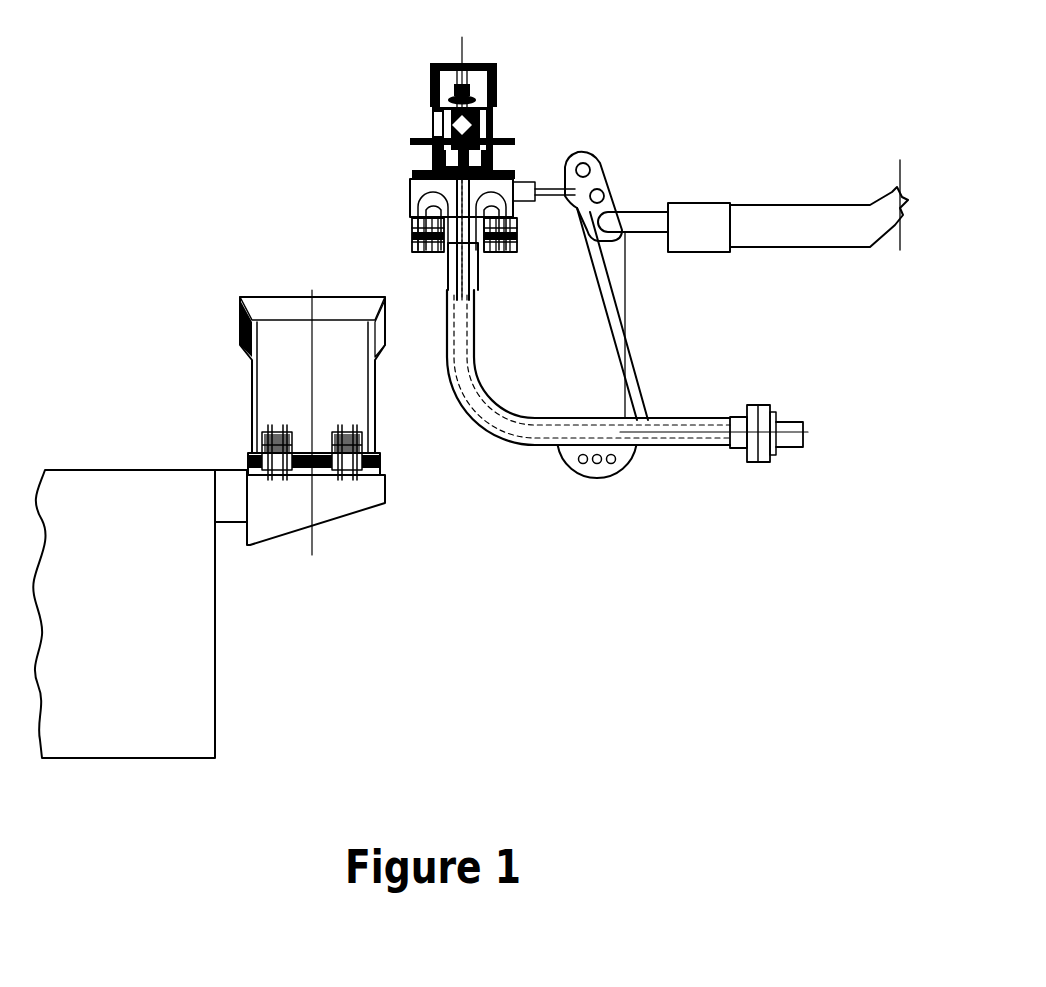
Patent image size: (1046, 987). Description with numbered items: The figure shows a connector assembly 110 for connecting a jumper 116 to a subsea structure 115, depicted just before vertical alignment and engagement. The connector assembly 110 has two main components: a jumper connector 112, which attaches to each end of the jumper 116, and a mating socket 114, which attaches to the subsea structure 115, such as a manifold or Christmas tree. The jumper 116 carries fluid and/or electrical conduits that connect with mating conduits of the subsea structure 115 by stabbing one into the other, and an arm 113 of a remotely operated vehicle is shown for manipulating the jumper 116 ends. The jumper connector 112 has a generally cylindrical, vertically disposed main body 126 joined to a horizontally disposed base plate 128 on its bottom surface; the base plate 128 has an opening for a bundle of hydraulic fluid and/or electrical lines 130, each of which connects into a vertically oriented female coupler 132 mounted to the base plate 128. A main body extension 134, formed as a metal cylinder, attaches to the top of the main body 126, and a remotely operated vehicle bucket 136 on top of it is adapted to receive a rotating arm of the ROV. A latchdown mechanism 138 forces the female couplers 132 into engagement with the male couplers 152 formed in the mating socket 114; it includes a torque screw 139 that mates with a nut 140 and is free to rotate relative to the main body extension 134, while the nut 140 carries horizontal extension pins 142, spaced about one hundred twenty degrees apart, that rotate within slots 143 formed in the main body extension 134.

The connector assembly 110 is at (181, 238).
The jumper connector 112 is at (287, 60).
The arm 113 is at (758, 218).
The mating socket 114 is at (240, 398).
The subsea structure 115 is at (232, 628).
The jumper 116 is at (480, 387).
The main body 126 is at (412, 192).
The base plate 128 is at (412, 232).
The hydraulic fluid and/or electrical lines 130 is at (452, 278).
The female coupler 132 is at (477, 231).
The main body extension 134 is at (430, 160).
The remotely operated vehicle bucket 136 is at (487, 92).
The latchdown mechanism 138 is at (493, 64).
The torque screw 139 is at (452, 83).
The nut 140 is at (430, 122).
The horizontal extension pins 142 is at (513, 138).
The slots 143 is at (428, 128).
The male couplers 152 is at (382, 457).